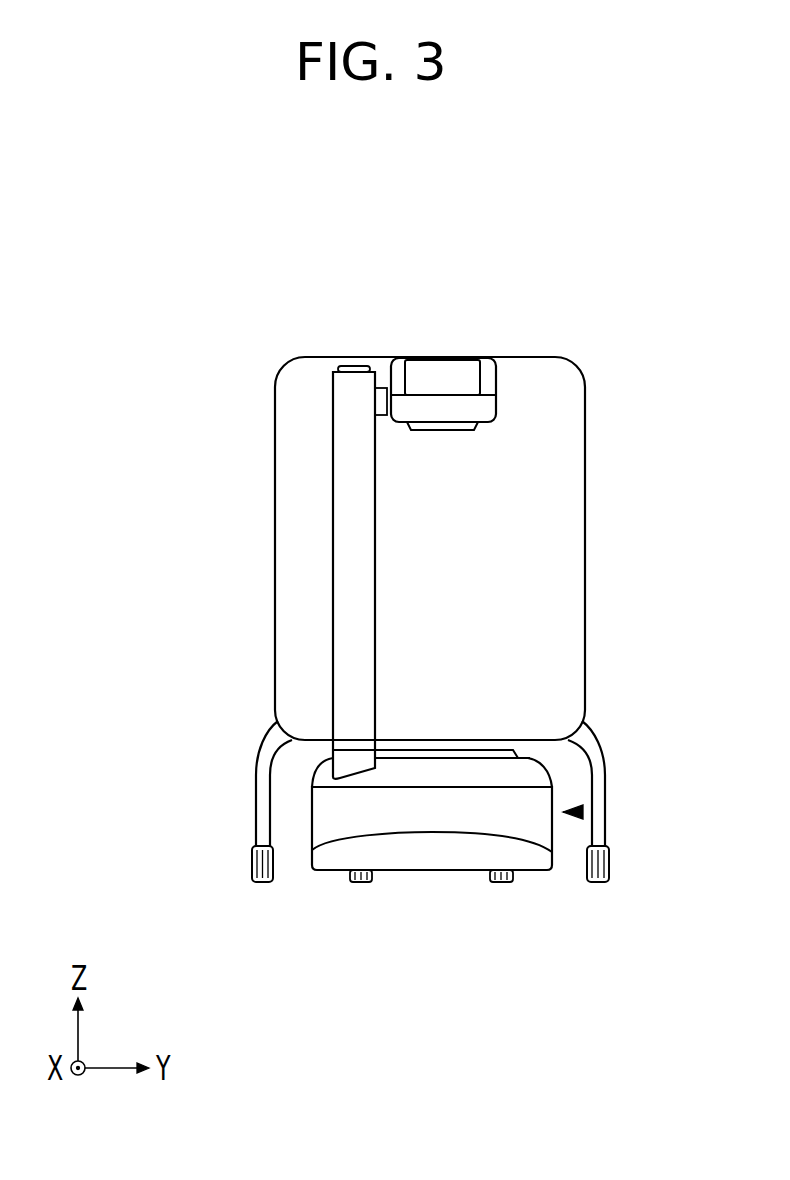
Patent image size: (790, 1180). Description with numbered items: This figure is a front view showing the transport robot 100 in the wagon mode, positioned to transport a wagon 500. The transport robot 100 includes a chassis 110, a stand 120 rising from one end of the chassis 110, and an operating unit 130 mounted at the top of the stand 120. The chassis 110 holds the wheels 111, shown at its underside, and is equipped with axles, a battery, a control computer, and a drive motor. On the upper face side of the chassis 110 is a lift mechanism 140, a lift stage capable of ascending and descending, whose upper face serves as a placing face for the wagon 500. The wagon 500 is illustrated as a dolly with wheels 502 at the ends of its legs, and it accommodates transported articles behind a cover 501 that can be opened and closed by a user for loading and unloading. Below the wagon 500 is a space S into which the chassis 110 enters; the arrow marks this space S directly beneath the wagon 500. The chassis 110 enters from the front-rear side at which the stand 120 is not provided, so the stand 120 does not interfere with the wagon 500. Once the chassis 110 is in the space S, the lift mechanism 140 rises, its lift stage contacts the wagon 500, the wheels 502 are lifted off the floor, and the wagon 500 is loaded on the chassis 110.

The transport robot 100 is at (300, 298).
The chassis 110 is at (433, 858).
The wheels 111 is at (355, 883).
The stand 120 is at (340, 545).
The operating unit 130 is at (440, 380).
The lift mechanism 140 is at (513, 750).
The wagon 500 is at (429, 593).
The cover 501 is at (586, 498).
The wheels 502 is at (253, 865).
The space S is at (584, 812).